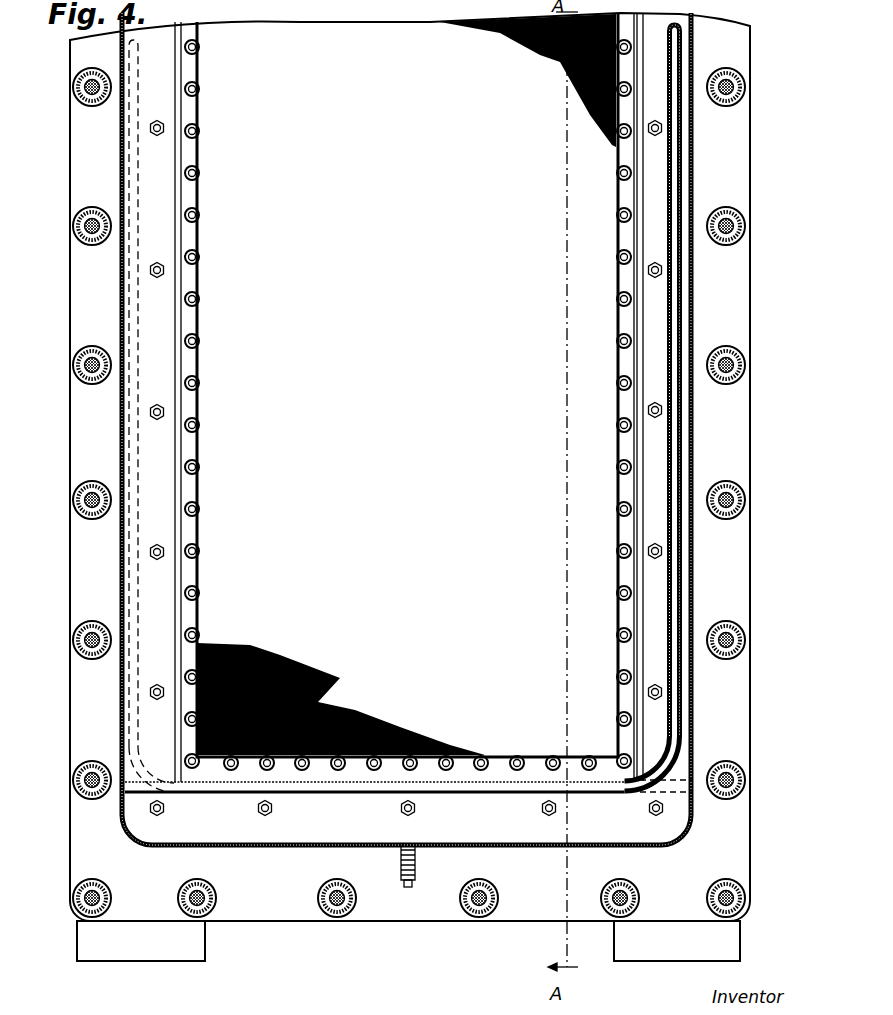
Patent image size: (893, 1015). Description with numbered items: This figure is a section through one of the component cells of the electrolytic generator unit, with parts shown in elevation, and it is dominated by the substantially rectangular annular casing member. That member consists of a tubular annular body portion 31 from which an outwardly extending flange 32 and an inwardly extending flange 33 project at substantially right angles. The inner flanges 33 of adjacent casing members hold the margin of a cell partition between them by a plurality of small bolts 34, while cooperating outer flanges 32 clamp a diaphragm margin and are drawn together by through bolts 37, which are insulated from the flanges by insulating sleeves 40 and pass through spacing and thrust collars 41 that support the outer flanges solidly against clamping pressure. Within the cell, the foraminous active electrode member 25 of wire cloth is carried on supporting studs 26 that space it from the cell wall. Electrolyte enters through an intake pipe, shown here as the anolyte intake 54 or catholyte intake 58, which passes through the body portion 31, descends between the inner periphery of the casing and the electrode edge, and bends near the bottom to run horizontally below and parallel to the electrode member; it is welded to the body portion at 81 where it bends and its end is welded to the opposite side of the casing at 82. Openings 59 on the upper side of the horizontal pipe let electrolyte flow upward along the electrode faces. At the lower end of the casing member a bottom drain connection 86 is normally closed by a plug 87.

The active electrode member 25 is at (407, 385).
The supporting studs 26 is at (200, 341).
The annular body portion 31 is at (119, 283).
The outwardly extending flange 32 is at (84, 320).
The inwardly extending flange 33 is at (167, 207).
The bolts 34 is at (165, 128).
The through bolts 37 is at (85, 768).
The insulating sleeves 40 is at (742, 648).
The spacing and thrust collars 41 is at (90, 387).
The anolyte intake 54 is at (132, 566).
The catholyte intake 58 is at (672, 176).
The openings 59 is at (583, 766).
The weld 81 is at (690, 759).
The weld 82 is at (121, 796).
The bottom drain connection 86 is at (400, 866).
The plug 87 is at (414, 881).